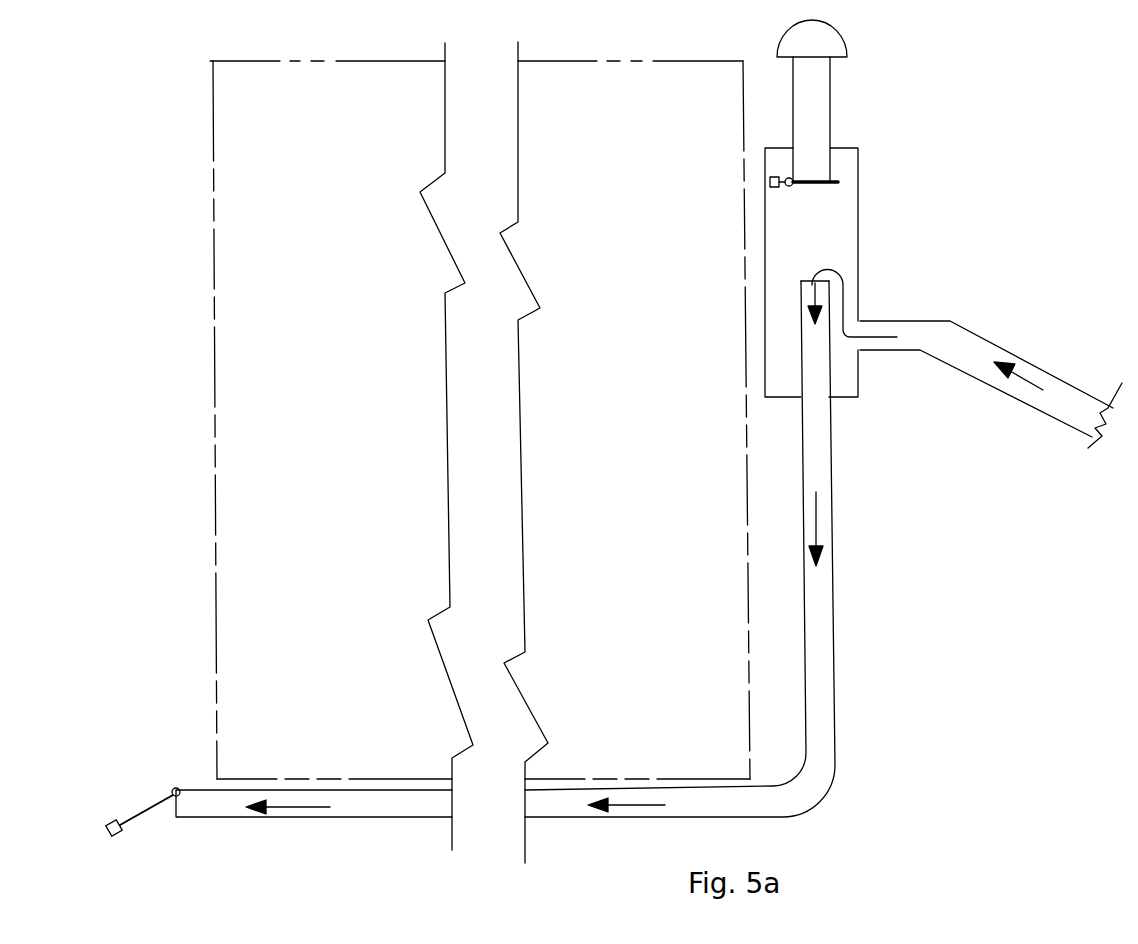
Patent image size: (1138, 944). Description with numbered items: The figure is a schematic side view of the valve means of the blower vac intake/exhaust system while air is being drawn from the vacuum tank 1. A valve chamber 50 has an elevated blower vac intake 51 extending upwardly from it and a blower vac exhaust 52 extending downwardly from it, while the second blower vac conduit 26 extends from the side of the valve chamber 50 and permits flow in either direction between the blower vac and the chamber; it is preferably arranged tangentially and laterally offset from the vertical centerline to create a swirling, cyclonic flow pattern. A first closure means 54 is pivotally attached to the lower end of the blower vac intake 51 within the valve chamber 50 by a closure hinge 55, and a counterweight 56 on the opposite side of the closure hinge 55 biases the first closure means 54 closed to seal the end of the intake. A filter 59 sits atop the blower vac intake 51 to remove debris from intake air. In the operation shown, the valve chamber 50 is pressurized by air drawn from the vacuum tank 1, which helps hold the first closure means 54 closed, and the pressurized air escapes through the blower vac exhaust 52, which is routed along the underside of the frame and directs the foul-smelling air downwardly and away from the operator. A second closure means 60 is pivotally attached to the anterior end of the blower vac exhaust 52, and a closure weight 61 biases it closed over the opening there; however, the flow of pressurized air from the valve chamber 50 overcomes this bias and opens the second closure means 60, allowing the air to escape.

The vacuum tank 1 is at (235, 442).
The second blower vac conduit 26 is at (975, 344).
The valve chamber 50 is at (847, 237).
The blower vac intake 51 is at (817, 88).
The blower vac exhaust 52 is at (823, 435).
The first closure means 54 is at (812, 188).
The closure hinge 55 is at (787, 177).
The counterweight 56 is at (772, 177).
The filter 59 is at (833, 43).
The second closure means 60 is at (148, 808).
The closure weight 61 is at (118, 837).